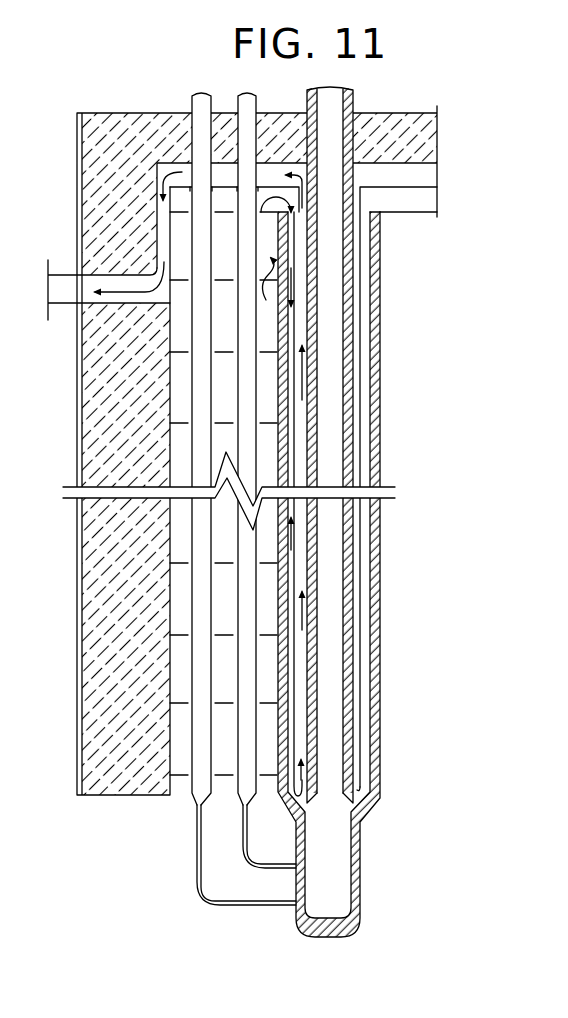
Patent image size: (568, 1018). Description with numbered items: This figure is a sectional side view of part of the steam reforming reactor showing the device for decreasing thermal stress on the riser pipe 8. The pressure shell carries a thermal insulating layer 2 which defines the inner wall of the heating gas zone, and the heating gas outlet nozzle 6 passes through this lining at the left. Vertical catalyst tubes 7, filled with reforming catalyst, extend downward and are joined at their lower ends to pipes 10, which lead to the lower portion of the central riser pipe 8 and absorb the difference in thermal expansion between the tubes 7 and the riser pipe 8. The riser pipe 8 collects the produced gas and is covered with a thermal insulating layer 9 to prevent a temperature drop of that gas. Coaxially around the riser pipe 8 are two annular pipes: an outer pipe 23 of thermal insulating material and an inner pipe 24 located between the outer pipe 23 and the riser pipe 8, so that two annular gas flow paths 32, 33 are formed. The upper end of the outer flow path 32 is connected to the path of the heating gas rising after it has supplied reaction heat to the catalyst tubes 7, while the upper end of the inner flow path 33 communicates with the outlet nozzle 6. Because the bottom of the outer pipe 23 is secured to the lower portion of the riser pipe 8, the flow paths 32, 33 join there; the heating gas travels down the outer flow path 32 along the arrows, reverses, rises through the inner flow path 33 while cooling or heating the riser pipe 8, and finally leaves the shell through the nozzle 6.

The thermal insulating layer 2 is at (92, 553).
The outlet nozzle 6 is at (47, 291).
The catalyst tubes 7 is at (192, 786).
The riser pipe 8 is at (335, 542).
The thermal insulating layer 9 is at (345, 566).
The pipes 10 is at (200, 877).
The outer pipe 23 is at (375, 650).
The inner pipe 24 is at (360, 600).
The outer flow path 32 is at (367, 329).
The inner flow path 33 is at (357, 424).